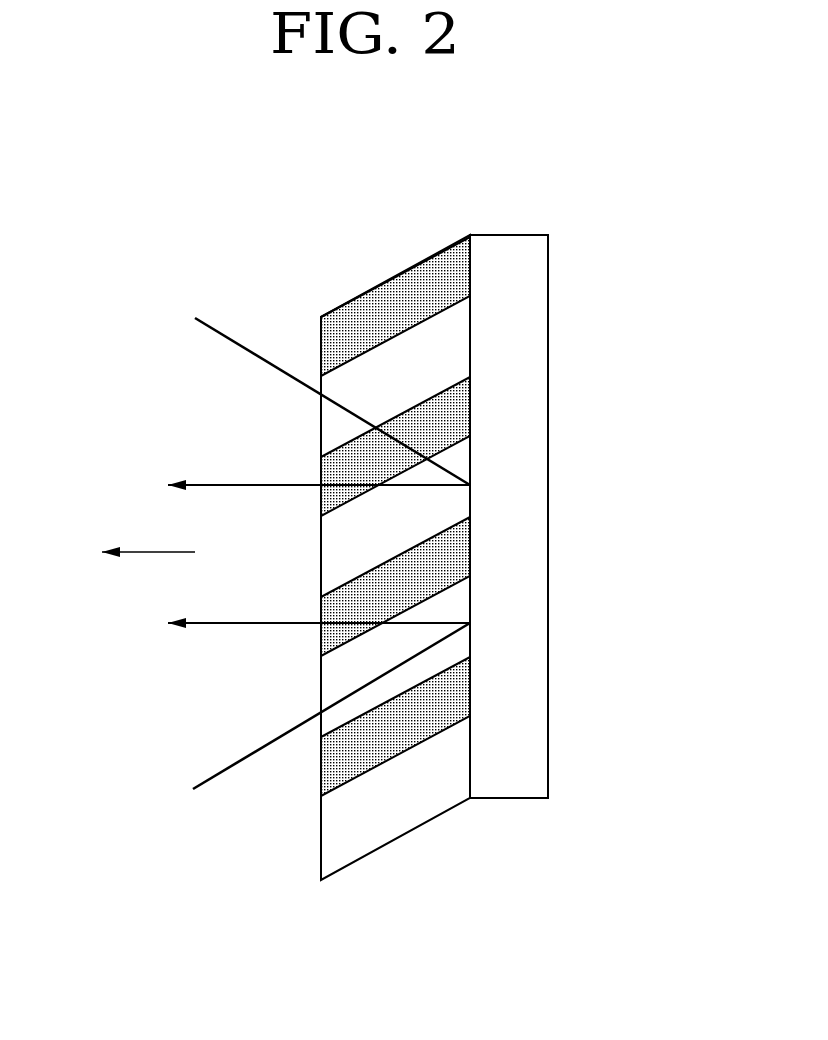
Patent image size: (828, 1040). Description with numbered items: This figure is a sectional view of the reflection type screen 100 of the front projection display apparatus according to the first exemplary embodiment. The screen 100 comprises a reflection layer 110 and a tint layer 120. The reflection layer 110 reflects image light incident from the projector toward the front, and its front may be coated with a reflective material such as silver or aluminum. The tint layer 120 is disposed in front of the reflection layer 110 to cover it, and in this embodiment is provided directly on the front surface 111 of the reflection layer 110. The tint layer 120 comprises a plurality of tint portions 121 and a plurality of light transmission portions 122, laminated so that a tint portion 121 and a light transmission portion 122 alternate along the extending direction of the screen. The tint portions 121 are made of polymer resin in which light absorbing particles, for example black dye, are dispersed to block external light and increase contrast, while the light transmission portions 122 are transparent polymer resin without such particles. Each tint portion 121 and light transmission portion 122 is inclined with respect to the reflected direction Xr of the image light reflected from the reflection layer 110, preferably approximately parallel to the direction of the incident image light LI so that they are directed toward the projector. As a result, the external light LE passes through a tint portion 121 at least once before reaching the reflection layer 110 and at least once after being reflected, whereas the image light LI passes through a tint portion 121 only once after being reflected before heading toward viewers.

The reflection type screen 100 is at (282, 173).
The reflection layer 110 is at (509, 218).
The front surface 111 is at (466, 350).
The tint layer 120 is at (356, 535).
The tint portion 121 is at (320, 497).
The light transmission portion 122 is at (338, 553).
The external light LE is at (213, 322).
The image light LI is at (214, 776).
The reflected direction Xr is at (148, 542).